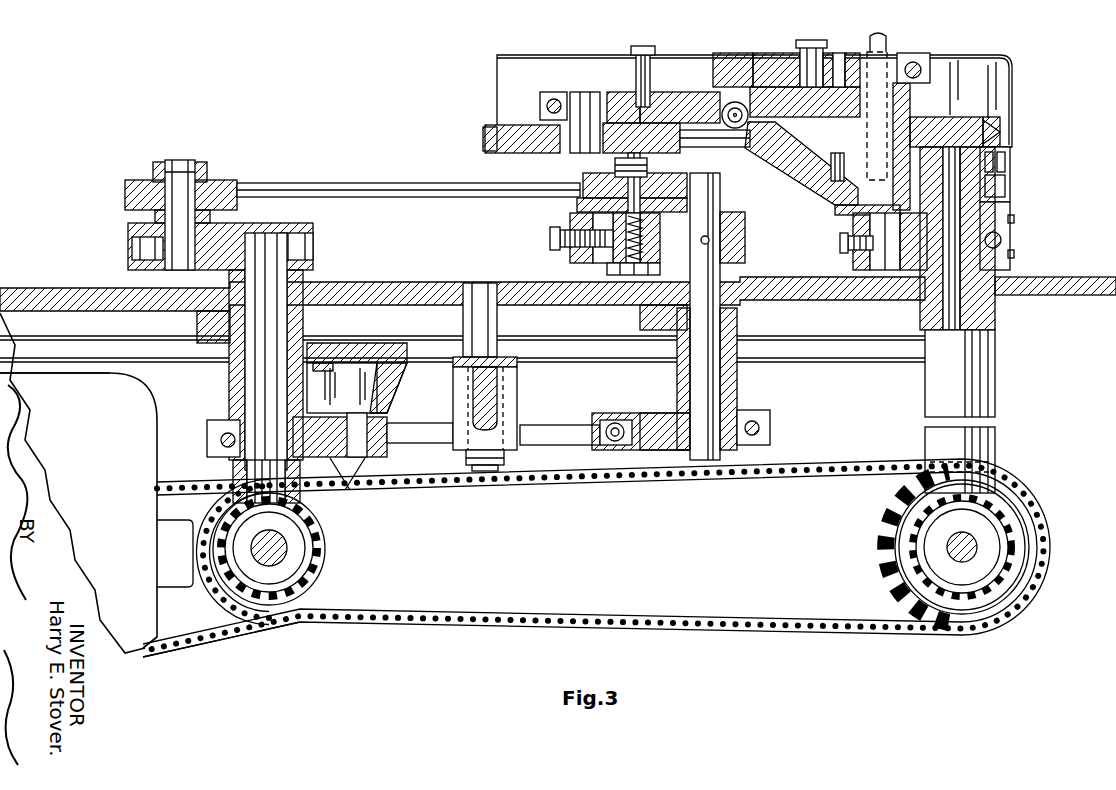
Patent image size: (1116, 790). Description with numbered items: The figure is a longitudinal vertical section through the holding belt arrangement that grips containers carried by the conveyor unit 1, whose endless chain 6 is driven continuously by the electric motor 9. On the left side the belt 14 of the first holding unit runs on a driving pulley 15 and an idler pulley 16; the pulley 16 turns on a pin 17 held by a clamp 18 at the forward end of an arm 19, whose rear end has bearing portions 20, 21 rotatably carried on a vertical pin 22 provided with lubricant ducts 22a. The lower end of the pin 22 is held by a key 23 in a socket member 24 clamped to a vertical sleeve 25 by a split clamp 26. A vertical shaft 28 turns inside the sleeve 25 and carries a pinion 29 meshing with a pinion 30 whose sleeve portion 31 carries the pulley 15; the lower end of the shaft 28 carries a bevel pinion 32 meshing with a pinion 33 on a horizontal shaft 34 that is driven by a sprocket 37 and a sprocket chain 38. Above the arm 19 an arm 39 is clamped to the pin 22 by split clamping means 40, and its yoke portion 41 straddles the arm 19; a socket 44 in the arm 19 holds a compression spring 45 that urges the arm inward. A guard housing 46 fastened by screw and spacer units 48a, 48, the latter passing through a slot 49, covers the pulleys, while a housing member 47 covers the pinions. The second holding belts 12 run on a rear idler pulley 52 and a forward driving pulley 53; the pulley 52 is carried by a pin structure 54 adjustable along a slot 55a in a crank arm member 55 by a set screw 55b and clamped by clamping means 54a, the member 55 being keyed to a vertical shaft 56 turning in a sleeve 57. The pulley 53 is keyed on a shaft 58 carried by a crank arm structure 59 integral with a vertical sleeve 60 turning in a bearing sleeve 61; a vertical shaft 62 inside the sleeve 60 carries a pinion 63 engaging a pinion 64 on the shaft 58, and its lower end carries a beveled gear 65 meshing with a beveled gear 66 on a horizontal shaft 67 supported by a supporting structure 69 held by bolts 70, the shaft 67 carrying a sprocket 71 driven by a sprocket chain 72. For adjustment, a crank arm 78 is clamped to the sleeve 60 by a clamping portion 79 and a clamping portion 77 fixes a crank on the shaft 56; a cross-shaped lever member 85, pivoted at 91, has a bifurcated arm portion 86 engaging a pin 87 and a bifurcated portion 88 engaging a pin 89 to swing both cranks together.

The conveyor unit 1 is at (480, 280).
The endless chain 6 is at (405, 282).
The electric motor 9 is at (130, 465).
The holding belts 12 is at (371, 176).
The belt 14 is at (485, 140).
The driving pulley 15 is at (1000, 115).
The idler pulley 16 is at (497, 125).
The pin 17 is at (580, 122).
The clamp 18 is at (553, 96).
The arm 19 is at (620, 94).
The bearing portion 20 is at (925, 62).
The bearing portion 21 is at (848, 210).
The vertical pin 22 is at (880, 255).
The lubricant ducts 22a is at (870, 46).
The key 23 is at (840, 243).
The socket member 24 is at (855, 230).
The sleeve 25 is at (995, 300).
The split clamp 26 is at (1005, 205).
The vertical shaft 28 is at (985, 323).
The pinion 29 is at (1010, 165).
The pinion 30 is at (831, 165).
The sleeve portion 31 is at (915, 120).
The bevel pinion 32 is at (995, 475).
The pinion 33 is at (1000, 510).
The horizontal shaft 34 is at (975, 545).
The sprocket 37 is at (893, 510).
The sprocket chain 38 is at (813, 476).
The arm 39 is at (765, 58).
The split clamping means 40 is at (900, 62).
The yoke portion 41 is at (723, 58).
The socket 44 is at (727, 122).
The compression spring 45 is at (735, 142).
The guard housing 46 is at (1000, 85).
The housing member 47 is at (790, 178).
The screw and spacer unit 48 is at (812, 42).
The screw and spacer unit 48a is at (643, 48).
The slot 49 is at (836, 56).
The rear idler pulley 52 is at (578, 205).
The forward driving pulley 53 is at (215, 182).
The pin structure 54 is at (618, 162).
The clamping means 54a is at (612, 268).
The crank arm member 55 is at (572, 230).
The slot 55a is at (593, 250).
The set screw 55b is at (550, 238).
The vertical shaft 56 is at (693, 225).
The sleeve 57 is at (737, 379).
The shaft 58 is at (178, 165).
The crank arm structure 59 is at (265, 228).
The vertical sleeve 60 is at (232, 386).
The bearing sleeve 61 is at (229, 402).
The vertical shaft 62 is at (247, 352).
The pinion 63 is at (302, 245).
The pinion 64 is at (132, 247).
The beveled gear 65 is at (326, 510).
The beveled gear 66 is at (302, 540).
The horizontal shaft 67 is at (287, 555).
The supporting structure 69 is at (392, 385).
The bolts 70 is at (350, 372).
The sprocket 71 is at (222, 590).
The sprocket chain 72 is at (213, 640).
The clamping portion 77 is at (760, 426).
The crank arm 78 is at (675, 450).
The clamping portion 79 is at (212, 430).
The cross-shaped lever member 85 is at (500, 390).
The bifurcated arm portion 86 is at (380, 448).
The pin 87 is at (360, 460).
The bifurcated portion 88 is at (585, 445).
The pin 89 is at (618, 415).
The pivot 91 is at (500, 346).